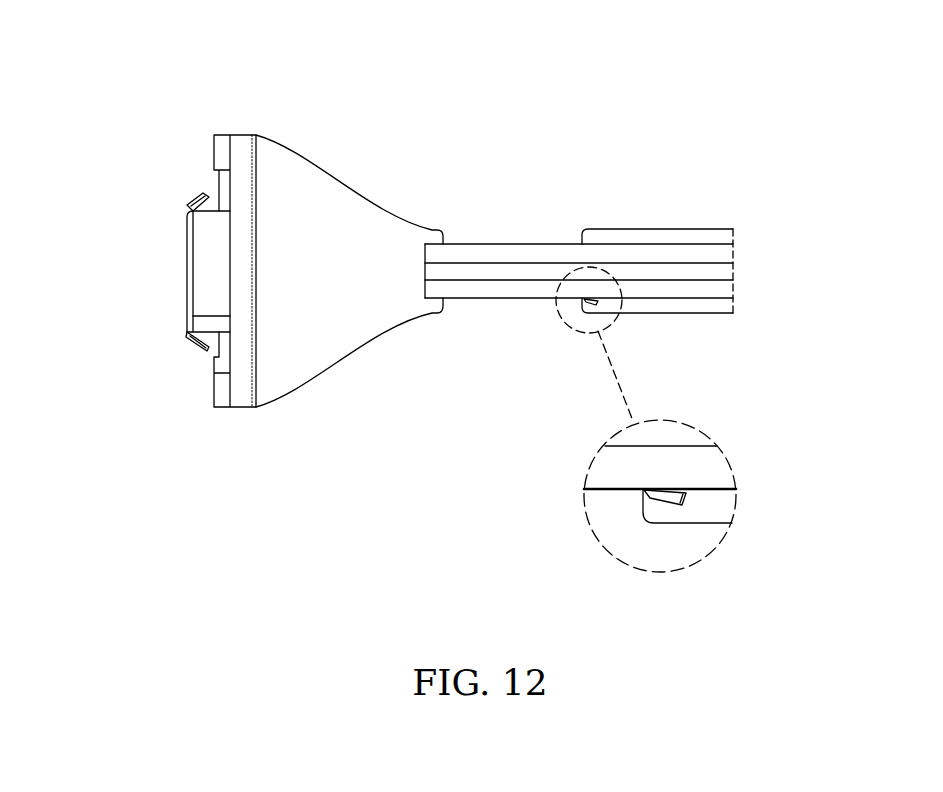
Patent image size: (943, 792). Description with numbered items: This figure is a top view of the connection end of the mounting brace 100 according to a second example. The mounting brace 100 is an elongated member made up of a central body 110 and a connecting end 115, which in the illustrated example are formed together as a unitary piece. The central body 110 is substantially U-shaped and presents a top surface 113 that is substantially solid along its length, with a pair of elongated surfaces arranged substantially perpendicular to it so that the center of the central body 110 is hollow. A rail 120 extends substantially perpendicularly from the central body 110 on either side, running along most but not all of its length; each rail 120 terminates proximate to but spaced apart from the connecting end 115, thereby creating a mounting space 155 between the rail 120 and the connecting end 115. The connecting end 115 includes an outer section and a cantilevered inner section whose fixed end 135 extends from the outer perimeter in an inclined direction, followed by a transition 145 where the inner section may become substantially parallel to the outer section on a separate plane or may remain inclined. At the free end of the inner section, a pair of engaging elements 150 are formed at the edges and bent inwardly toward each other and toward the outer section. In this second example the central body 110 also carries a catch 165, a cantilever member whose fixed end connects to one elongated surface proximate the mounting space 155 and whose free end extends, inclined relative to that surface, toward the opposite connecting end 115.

The mounting brace 100 is at (142, 50).
The connecting end 115 is at (254, 119).
The transition 145 is at (198, 275).
The fixed end 135 is at (223, 316).
The engaging elements 150 is at (186, 193).
The mounting space 155 is at (505, 229).
The central body 110 is at (489, 321).
The top surface 113 is at (717, 272).
The rail 120 is at (660, 228).
The catch 165 is at (667, 493).